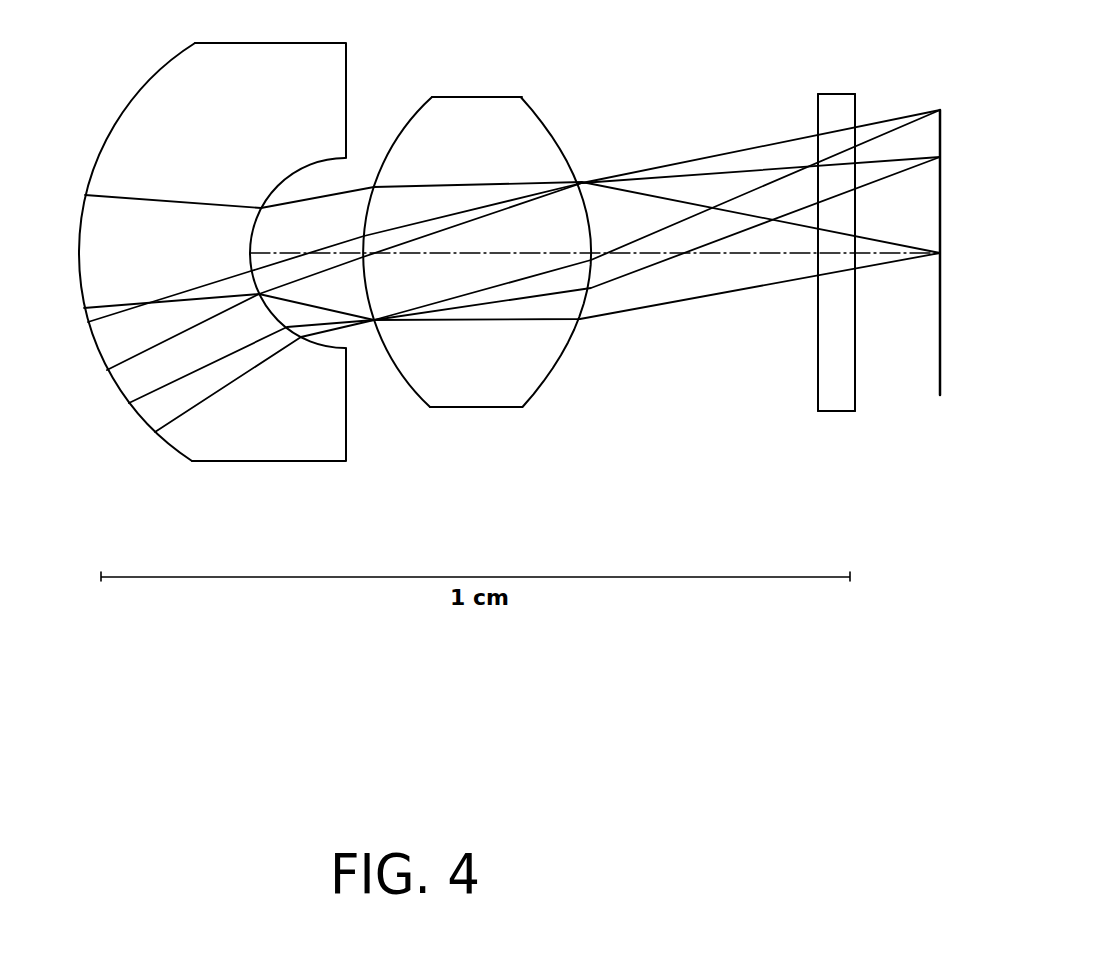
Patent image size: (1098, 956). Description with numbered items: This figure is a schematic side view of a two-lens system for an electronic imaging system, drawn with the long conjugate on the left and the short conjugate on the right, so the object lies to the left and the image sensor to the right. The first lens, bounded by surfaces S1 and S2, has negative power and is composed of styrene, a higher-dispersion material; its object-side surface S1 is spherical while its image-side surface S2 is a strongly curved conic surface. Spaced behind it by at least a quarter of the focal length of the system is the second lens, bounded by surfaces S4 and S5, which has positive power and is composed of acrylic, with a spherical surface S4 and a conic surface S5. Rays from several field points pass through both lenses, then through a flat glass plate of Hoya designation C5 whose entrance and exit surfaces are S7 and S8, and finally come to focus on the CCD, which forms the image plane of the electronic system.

The first surface of the first lens S1 is at (183, 452).
The second surface of the first lens S2 is at (327, 347).
The first surface of the second lens S4 is at (401, 133).
The second surface of the second lens S5 is at (562, 151).
The first surface of the glass plate S7 is at (817, 382).
The second surface of the glass plate S8 is at (855, 362).
The element CCD is at (941, 363).